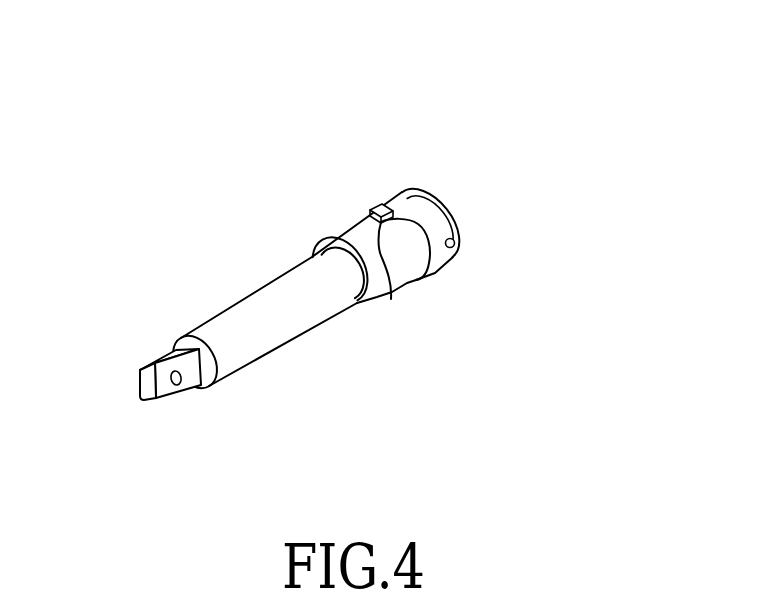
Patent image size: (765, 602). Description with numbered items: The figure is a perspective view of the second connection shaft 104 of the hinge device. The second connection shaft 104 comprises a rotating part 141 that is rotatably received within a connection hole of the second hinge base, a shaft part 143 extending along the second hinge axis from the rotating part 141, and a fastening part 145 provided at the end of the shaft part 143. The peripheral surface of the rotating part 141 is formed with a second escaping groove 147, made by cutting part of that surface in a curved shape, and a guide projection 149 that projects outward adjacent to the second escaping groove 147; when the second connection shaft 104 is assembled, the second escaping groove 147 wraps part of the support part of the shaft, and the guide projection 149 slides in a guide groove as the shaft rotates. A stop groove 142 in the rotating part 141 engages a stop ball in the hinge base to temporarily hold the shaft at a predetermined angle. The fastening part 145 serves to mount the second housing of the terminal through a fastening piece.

The second connection shaft 104 is at (541, 36).
The rotating part 141 is at (355, 228).
The stop groove 142 is at (455, 243).
The shaft part 143 is at (275, 333).
The fastening part 145 is at (143, 386).
The second escaping groove 147 is at (403, 263).
The guide projection 149 is at (377, 206).